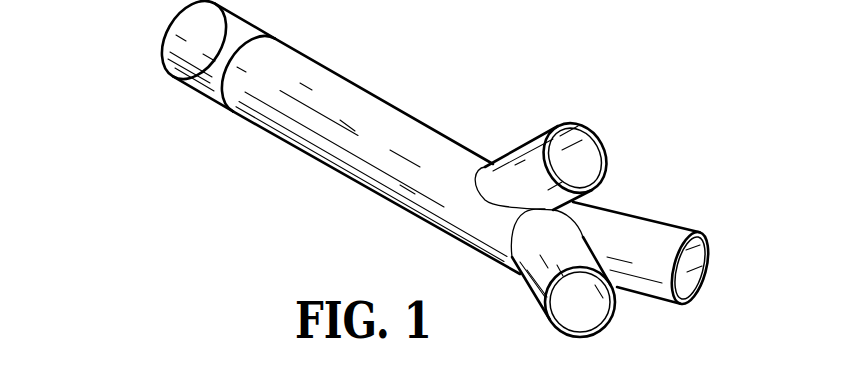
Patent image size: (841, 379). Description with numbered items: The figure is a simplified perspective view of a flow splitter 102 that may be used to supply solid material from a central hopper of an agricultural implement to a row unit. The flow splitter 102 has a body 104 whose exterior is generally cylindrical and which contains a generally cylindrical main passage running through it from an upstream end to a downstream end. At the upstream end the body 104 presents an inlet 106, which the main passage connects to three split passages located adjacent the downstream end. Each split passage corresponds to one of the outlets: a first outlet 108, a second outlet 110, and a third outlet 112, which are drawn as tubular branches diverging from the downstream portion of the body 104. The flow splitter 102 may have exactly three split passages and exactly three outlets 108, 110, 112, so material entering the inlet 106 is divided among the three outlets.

The flow splitter 102 is at (473, 75).
The body 104 is at (252, 113).
The inlet 106 is at (166, 37).
The first outlet 108 is at (525, 275).
The second outlet 110 is at (687, 229).
The third outlet 112 is at (605, 152).